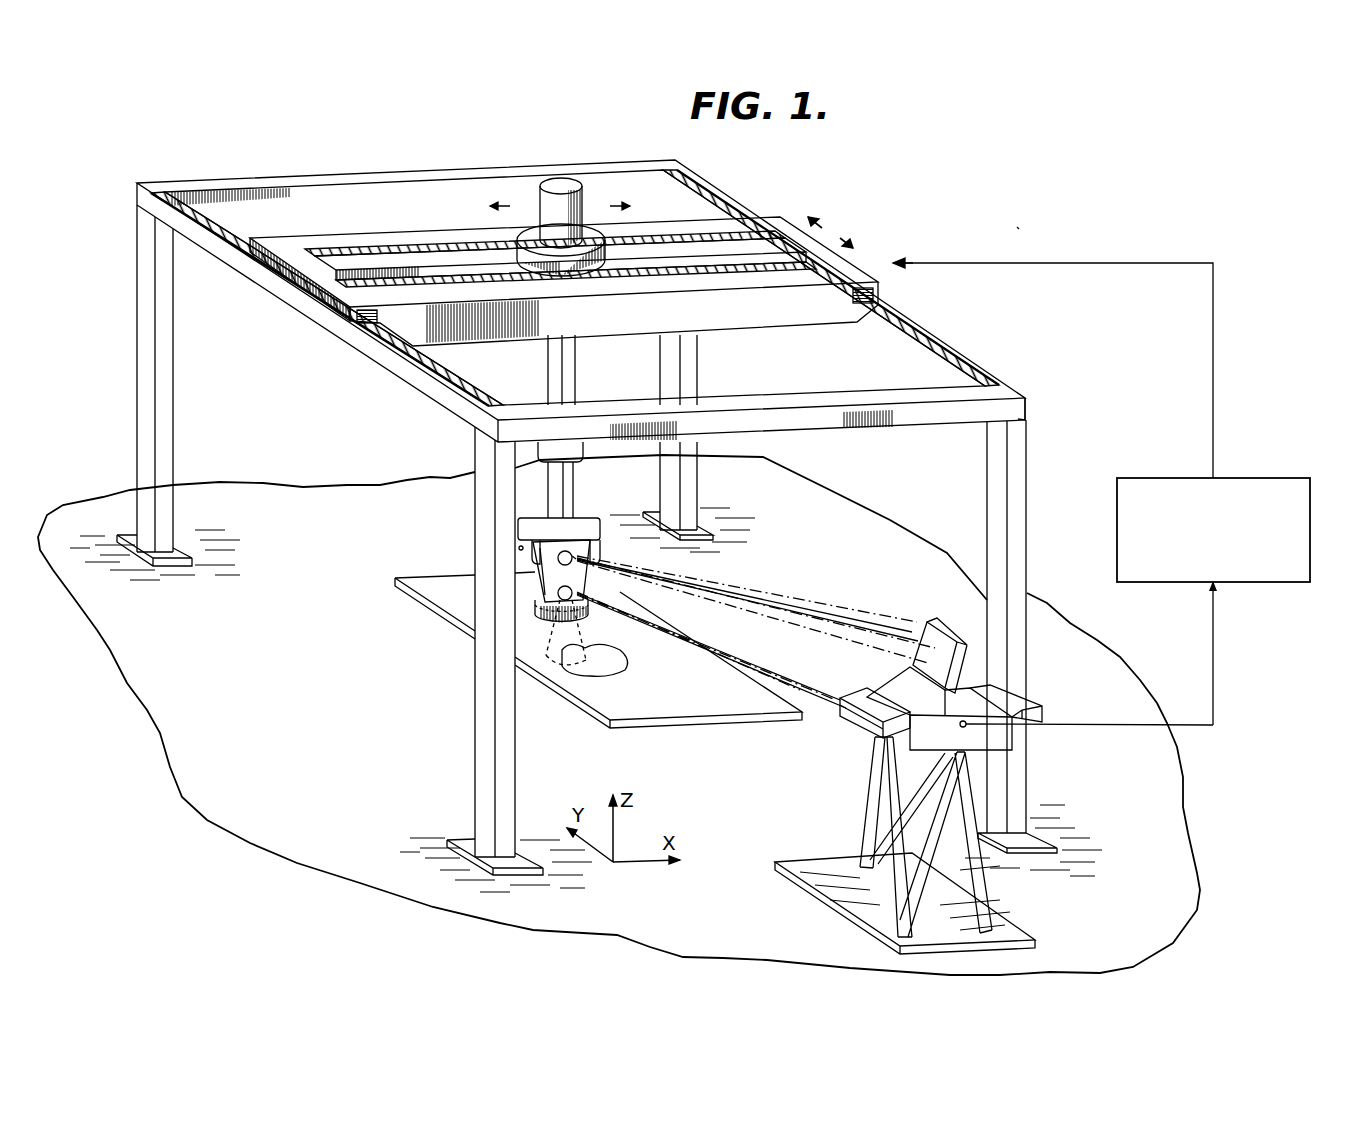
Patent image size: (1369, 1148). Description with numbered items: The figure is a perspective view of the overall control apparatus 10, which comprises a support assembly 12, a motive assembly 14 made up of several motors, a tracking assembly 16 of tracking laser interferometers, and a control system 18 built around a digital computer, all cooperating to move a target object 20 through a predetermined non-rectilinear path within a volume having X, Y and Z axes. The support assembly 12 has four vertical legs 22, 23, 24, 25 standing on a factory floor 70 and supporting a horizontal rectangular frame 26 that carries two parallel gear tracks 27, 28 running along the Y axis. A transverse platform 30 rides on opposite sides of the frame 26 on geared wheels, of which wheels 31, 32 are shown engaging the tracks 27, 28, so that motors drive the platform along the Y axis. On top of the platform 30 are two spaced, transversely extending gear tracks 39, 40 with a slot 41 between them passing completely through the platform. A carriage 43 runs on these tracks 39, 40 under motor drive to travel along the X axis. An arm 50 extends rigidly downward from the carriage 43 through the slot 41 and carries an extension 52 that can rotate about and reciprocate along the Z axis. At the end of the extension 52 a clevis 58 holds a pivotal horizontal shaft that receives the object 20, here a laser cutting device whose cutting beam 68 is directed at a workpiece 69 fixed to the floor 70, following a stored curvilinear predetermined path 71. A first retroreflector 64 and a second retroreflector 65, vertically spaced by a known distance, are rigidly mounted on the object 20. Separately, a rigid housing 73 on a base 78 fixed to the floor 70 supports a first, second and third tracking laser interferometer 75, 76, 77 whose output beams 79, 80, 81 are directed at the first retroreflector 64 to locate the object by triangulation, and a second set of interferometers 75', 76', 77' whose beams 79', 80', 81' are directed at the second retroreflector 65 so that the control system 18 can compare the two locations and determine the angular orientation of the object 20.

The control apparatus 10 is at (1017, 227).
The support assembly 12 is at (718, 182).
The motive assembly 14 is at (893, 291).
The tracking assembly 16 is at (1048, 740).
The control system 18 is at (1290, 478).
The target object 20 is at (535, 584).
The vertical leg 22 is at (1028, 502).
The vertical leg 23 is at (475, 672).
The vertical leg 24 is at (175, 400).
The vertical leg 25 is at (700, 357).
The horizontal rectangular frame 26 is at (1002, 392).
The gear track 27 is at (958, 353).
The gear track 28 is at (470, 385).
The transverse platform 30 is at (782, 316).
The geared wheel 31 is at (851, 297).
The geared wheel 32 is at (355, 317).
The gear track 39 is at (676, 272).
The gear track 40 is at (430, 250).
The slot 41 is at (390, 262).
The carriage 43 is at (560, 180).
The arm 50 is at (577, 382).
The extension 52 is at (568, 503).
The clevis 58 is at (536, 520).
The first retroreflector 64 is at (552, 623).
The second retroreflector 65 is at (574, 556).
The cutting beam 68 is at (617, 648).
The workpiece 69 is at (658, 726).
The factory floor 70 is at (160, 715).
The predetermined path 71 is at (610, 677).
The rigid housing 73 is at (1002, 752).
The first tracking laser interferometer 75 is at (1017, 683).
The tracking laser interferometer 75' is at (1089, 706).
The second tracking laser interferometer 76 is at (916, 636).
The tracking laser interferometer 76' is at (943, 596).
The third tracking laser interferometer 77 is at (866, 741).
The tracking laser interferometer 77' is at (836, 732).
The base 78 is at (1020, 935).
The laser output beam 79 is at (744, 595).
The laser output beam 79' is at (747, 582).
The laser output beam 80 is at (752, 626).
The laser output beam 80' is at (756, 609).
The laser output beam 81 is at (711, 650).
The laser output beam 81' is at (706, 646).